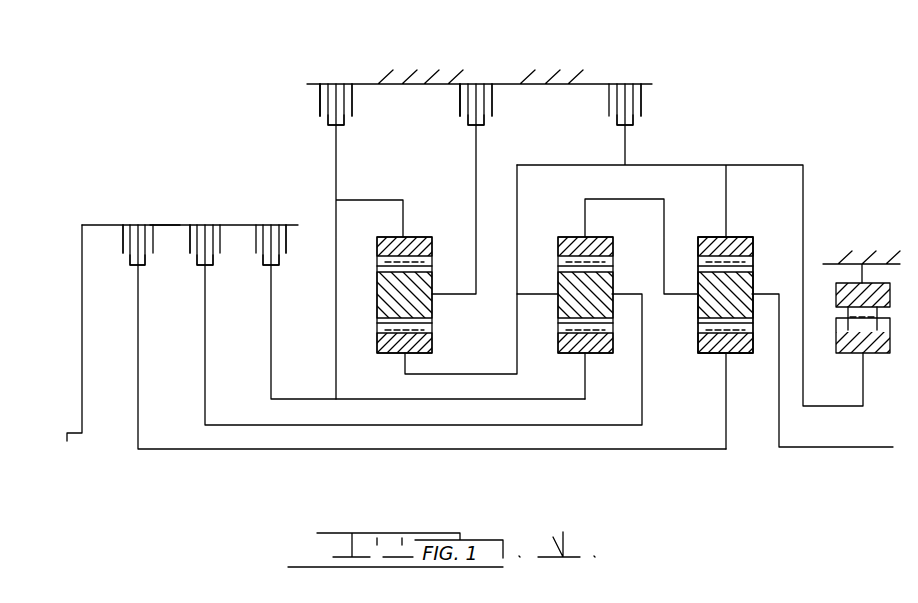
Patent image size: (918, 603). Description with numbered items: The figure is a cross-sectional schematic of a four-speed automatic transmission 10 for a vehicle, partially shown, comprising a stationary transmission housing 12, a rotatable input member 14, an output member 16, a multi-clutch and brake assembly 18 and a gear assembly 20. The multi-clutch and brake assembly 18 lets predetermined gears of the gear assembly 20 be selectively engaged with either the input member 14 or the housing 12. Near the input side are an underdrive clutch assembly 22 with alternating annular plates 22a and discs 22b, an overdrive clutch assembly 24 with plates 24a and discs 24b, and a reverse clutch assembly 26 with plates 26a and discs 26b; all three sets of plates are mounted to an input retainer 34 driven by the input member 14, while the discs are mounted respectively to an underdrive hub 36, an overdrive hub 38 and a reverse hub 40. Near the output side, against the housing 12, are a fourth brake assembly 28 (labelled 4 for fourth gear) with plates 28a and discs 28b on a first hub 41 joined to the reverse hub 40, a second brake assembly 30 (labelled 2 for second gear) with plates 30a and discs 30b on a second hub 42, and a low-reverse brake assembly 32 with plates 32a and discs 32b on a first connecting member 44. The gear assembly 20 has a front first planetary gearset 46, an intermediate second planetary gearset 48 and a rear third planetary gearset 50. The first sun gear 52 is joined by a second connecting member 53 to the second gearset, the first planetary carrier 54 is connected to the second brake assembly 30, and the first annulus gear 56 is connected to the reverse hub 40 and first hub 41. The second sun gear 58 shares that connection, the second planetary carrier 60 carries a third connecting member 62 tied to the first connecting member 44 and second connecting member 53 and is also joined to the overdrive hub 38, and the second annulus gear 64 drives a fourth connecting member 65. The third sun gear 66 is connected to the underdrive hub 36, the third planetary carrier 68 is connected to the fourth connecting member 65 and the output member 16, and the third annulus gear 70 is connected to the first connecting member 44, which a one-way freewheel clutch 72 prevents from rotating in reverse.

The four-speed automatic transmission 10 is at (786, 102).
The transmission housing 12 is at (553, 80).
The input member 14 is at (67, 441).
The output member 16 is at (808, 447).
The multi-clutch and brake assembly 18 is at (181, 224).
The gear assembly 20 is at (756, 236).
The underdrive clutch assembly 22 is at (122, 248).
The annular plates 22a is at (132, 228).
The annular discs 22b is at (124, 258).
The overdrive clutch assembly 24 is at (188, 234).
The annular plates 24a is at (215, 227).
The annular discs 24b is at (196, 260).
The reverse clutch assembly 26 is at (295, 225).
The annular plates 26a is at (274, 241).
The annular discs 26b is at (258, 263).
The fourth brake assembly 28 is at (348, 84).
The annular plates 28a is at (319, 97).
The annular discs 28b is at (346, 121).
The second brake assembly 30 is at (490, 84).
The annular plates 30a is at (462, 92).
The annular discs 30b is at (482, 123).
The low-reverse brake assembly 32 is at (638, 84).
The annular plates 32a is at (643, 104).
The annular discs 32b is at (616, 116).
The input retainer 34 is at (168, 224).
The underdrive hub 36 is at (138, 424).
The overdrive hub 38 is at (206, 370).
The reverse hub 40 is at (271, 343).
The first hub 41 is at (338, 174).
The second hub 42 is at (476, 195).
The first connecting member 44 is at (694, 165).
The first planetary gearset 46 is at (406, 301).
The second planetary gearset 48 is at (583, 288).
The third planetary gearset 50 is at (723, 315).
The first sun gear 52 is at (394, 346).
The second connecting member 53 is at (503, 376).
The first planetary carrier 54 is at (425, 285).
The first annulus gear 56 is at (382, 246).
The second sun gear 58 is at (600, 346).
The second planetary carrier 60 is at (606, 290).
The third connecting member 62 is at (530, 292).
The second annulus gear 64 is at (606, 247).
The fourth connecting member 65 is at (623, 200).
The third sun gear 66 is at (738, 346).
The third planetary carrier 68 is at (712, 300).
The third annulus gear 70 is at (738, 247).
The one-way or freewheel clutch 72 is at (855, 325).
The second speed brake label 2 is at (476, 100).
The fourth speed brake label 4 is at (336, 100).